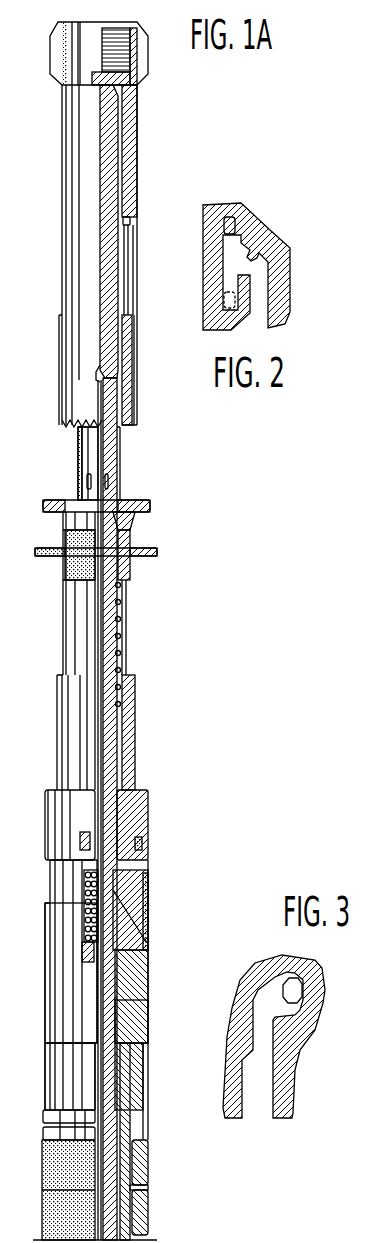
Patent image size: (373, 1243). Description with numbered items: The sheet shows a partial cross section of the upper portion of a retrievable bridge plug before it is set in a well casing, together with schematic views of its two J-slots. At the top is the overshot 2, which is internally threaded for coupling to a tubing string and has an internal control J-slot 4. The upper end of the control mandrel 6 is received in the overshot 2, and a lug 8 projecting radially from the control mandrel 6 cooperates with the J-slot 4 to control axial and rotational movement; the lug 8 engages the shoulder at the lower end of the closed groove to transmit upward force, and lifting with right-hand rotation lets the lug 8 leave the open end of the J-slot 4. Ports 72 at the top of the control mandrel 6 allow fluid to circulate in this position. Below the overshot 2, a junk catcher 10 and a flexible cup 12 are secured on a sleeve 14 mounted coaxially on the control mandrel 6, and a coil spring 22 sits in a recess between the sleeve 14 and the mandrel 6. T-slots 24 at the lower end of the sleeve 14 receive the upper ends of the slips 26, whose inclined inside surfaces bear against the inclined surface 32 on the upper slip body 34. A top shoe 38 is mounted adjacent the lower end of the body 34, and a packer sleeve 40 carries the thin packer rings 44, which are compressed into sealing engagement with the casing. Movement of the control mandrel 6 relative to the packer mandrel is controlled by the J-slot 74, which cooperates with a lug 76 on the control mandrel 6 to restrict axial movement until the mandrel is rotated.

In FIG. 1A, the overshot 2 is at (130, 155).
In FIG. 1A, the control J-slot 4 is at (130, 272).
In FIG. 2, the control J-slot 4 is at (277, 240).
In FIG. 1A, the control mandrel 6 is at (85, 452).
In FIG. 1A, the lug 8 is at (127, 222).
In FIG. 2, the lug 8 is at (230, 225).
In FIG. 1A, the junk catcher 10 is at (136, 518).
In FIG. 1A, the flexible cup 12 is at (146, 557).
In FIG. 1A, the sleeve 14 is at (128, 742).
In FIG. 1A, the coil spring 22 is at (124, 645).
In FIG. 1A, the T-slots 24 is at (83, 840).
In FIG. 1A, the slip 26 is at (85, 888).
In FIG. 1A, the inclined surface 32 is at (150, 945).
In FIG. 1A, the upper slip body 34 is at (60, 1008).
In FIG. 1A, the top shoe 38 is at (66, 1082).
In FIG. 1A, the packer sleeve 40 is at (135, 1174).
In FIG. 1A, the packer rings 44 is at (149, 1158).
In FIG. 1A, the ports 72 is at (87, 481).
In FIG. 3, the J-slot 74 is at (262, 1037).
In FIG. 1A, the lug 76 is at (130, 992).
In FIG. 3, the lug 76 is at (295, 993).